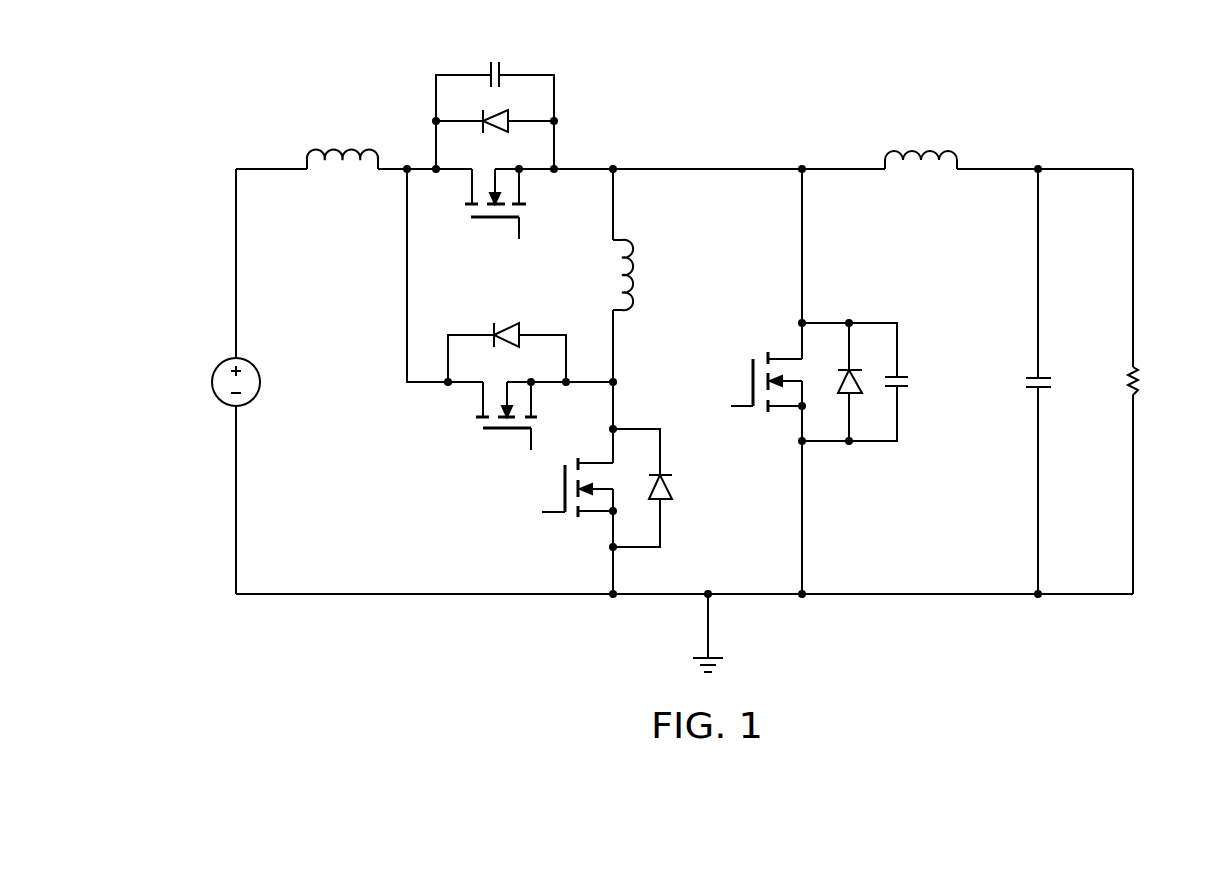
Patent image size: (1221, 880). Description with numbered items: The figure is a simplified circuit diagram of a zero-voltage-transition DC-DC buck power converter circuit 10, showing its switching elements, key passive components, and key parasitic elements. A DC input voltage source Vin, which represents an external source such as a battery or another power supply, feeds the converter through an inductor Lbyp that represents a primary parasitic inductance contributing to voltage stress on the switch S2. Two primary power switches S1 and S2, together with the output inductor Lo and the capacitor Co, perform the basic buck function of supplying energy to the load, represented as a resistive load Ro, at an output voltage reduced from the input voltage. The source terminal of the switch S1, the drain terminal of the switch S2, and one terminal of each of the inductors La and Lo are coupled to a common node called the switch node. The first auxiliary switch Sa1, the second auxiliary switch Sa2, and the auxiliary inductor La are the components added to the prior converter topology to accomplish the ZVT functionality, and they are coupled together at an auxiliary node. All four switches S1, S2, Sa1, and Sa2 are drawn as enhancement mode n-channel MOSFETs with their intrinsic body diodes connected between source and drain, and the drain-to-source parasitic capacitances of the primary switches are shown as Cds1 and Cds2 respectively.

The circuit 10 is at (371, 65).
The input voltage source Vin is at (216, 382).
The inductor Lbyp is at (342, 144).
The drain to source parasitic capacitance Cds1 is at (495, 102).
The primary power switch S1 is at (495, 178).
The auxiliary inductor La is at (638, 275).
The first auxiliary switch Sa1 is at (507, 391).
The second auxiliary switch Sa2 is at (596, 488).
The primary power switch S2 is at (791, 382).
The drain to source parasitic capacitance Cds2 is at (908, 382).
The output inductor Lo is at (921, 146).
The capacitor Co is at (1056, 384).
The resistive load Ro is at (1148, 381).